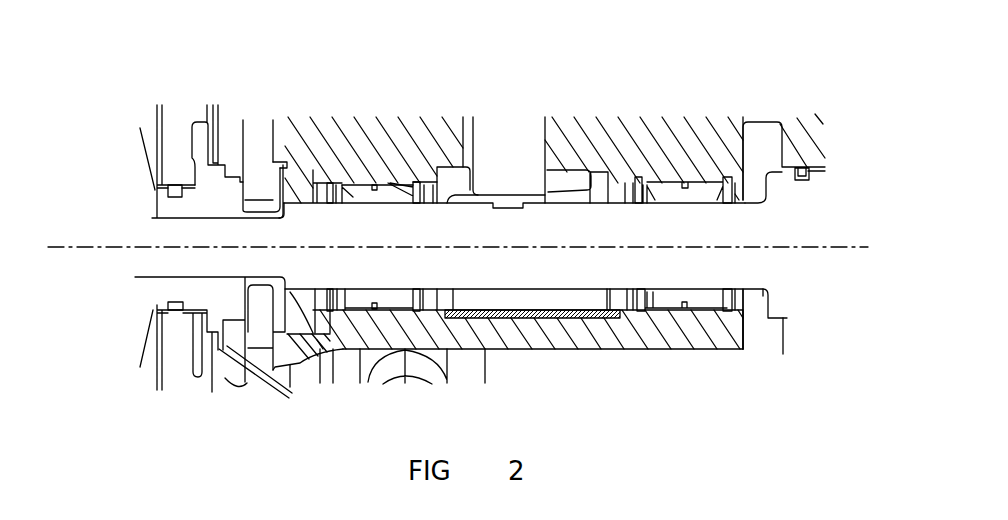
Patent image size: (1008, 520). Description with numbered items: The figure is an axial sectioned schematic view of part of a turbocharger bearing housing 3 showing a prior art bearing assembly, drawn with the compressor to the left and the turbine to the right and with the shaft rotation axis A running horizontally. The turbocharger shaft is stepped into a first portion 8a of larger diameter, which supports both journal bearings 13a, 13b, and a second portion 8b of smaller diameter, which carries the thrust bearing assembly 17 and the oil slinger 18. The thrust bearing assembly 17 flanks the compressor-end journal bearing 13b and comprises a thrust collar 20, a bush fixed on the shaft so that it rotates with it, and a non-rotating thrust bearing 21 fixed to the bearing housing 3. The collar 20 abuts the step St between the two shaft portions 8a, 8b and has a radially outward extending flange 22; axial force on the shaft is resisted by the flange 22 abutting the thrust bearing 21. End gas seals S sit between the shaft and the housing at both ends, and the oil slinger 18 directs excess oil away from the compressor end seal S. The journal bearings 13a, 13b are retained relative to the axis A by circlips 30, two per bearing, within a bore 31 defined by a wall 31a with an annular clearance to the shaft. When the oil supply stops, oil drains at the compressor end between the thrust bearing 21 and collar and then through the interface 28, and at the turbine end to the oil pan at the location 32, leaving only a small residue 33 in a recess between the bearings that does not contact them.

The rotation axis A is at (83, 247).
The bearing housing 3 is at (565, 338).
The first portion of the shaft 8a is at (707, 260).
The second portion of the shaft 8b is at (158, 237).
The journal bearing 13a is at (668, 176).
The journal bearing 13b is at (392, 185).
The thrust bearing assembly 17 is at (255, 126).
The oil slinger 18 is at (160, 285).
The thrust collar 20 is at (280, 188).
The thrust bearing 21 is at (258, 147).
The flange 22 is at (300, 177).
The interface 28 is at (282, 378).
The circlips 30 is at (413, 177).
The bore 31 is at (643, 180).
The wall 31a is at (653, 312).
The drain location 32 is at (755, 320).
The oil residue 33 is at (517, 320).
The end gas seals S is at (802, 167).
The step St is at (302, 357).